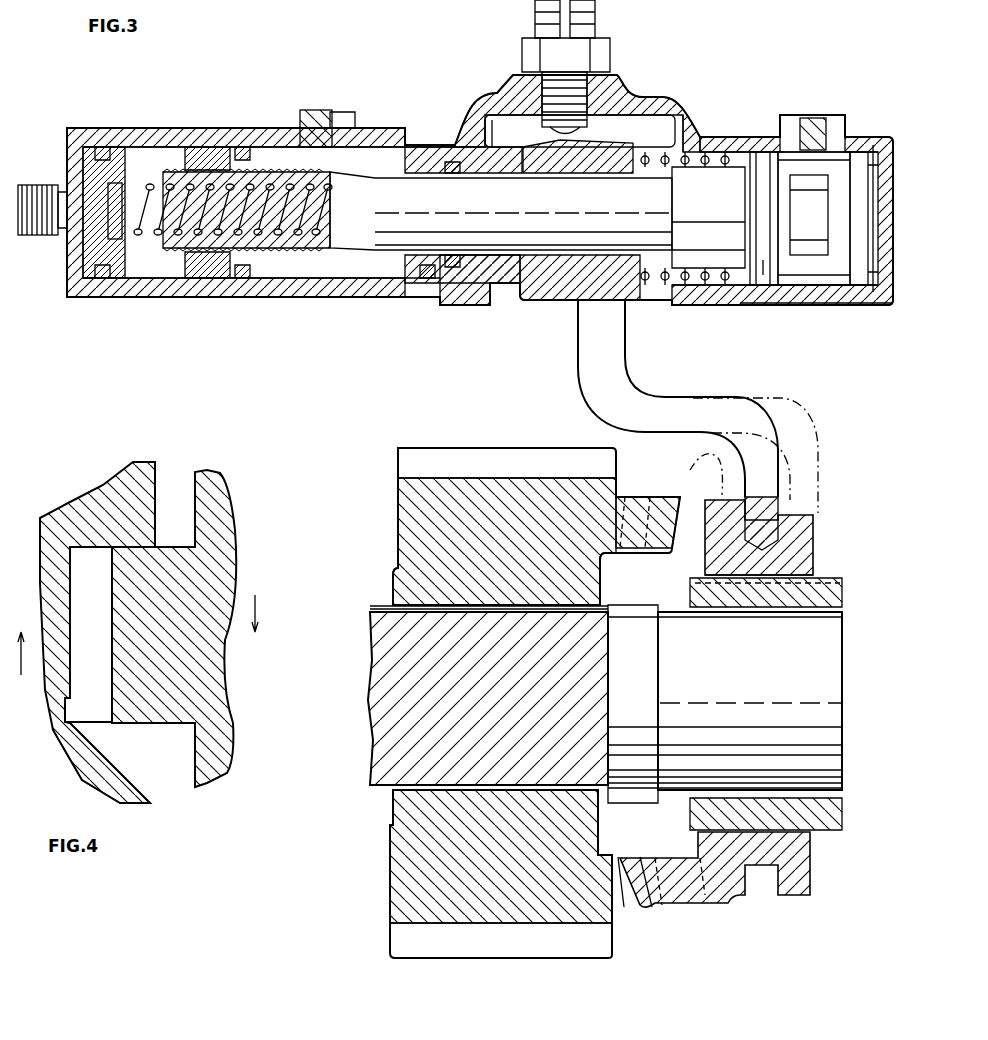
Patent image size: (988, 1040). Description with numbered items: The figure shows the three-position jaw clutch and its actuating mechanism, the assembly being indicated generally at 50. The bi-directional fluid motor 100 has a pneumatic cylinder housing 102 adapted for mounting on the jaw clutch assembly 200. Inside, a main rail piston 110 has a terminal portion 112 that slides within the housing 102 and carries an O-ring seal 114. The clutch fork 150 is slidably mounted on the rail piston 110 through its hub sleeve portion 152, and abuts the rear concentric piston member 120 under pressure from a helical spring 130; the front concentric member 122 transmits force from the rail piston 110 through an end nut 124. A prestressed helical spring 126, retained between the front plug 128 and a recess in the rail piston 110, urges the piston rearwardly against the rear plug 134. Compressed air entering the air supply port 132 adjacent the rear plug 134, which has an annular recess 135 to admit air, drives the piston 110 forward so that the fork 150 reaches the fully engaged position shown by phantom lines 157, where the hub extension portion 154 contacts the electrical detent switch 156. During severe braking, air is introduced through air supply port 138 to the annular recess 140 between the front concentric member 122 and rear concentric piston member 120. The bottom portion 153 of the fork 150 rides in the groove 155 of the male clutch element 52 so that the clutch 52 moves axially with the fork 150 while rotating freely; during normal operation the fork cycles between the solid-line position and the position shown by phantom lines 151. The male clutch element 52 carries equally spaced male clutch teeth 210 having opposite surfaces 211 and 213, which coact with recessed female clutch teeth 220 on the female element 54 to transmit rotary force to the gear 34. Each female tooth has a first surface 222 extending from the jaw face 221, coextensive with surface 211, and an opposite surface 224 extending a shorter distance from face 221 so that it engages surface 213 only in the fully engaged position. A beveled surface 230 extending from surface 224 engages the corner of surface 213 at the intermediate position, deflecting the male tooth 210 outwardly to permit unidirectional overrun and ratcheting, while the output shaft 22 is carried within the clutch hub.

In FIG. 3, the brake actuator assembly 50 is at (354, 36).
In FIG. 3, the bi-directional fluid motor 100 is at (372, 298).
In FIG. 3, the pneumatic cylinder housing 102 is at (152, 135).
In FIG. 3, the main rail piston 110 is at (655, 275).
In FIG. 3, the terminal portion 112 is at (800, 268).
In FIG. 3, the O-ring seal 114 is at (765, 155).
In FIG. 3, the rear concentric piston member 120 is at (472, 270).
In FIG. 3, the front concentric member 122 is at (272, 278).
In FIG. 3, the end nut 124 is at (202, 148).
In FIG. 3, the prestressed helical spring 126 is at (140, 237).
In FIG. 3, the front plug 128 is at (127, 287).
In FIG. 3, the helical spring 130 is at (668, 162).
In FIG. 3, the air supply port 132 is at (818, 118).
In FIG. 3, the rear plug 134 is at (824, 214).
In FIG. 3, the annular recess 135 is at (848, 160).
In FIG. 3, the air supply port 138 is at (318, 112).
In FIG. 3, the annular recess 140 is at (402, 148).
In FIG. 3, the clutch fork 150 is at (598, 365).
In FIG. 3, the phantom lines 151 is at (795, 390).
In FIG. 3, the hub sleeve portion 152 is at (578, 283).
In FIG. 3, the bottom portion 153 is at (770, 520).
In FIG. 3, the hub extension portion 154 is at (600, 138).
In FIG. 3, the groove 155 is at (820, 560).
In FIG. 3, the electrical detent switch 156 is at (590, 52).
In FIG. 3, the phantom lines 157 is at (715, 470).
In FIG. 3, the jaw clutch assembly 200 is at (830, 590).
In FIG. 3, the male clutch teeth 210 is at (688, 910).
In FIG. 4, the male clutch teeth 210 is at (190, 578).
In FIG. 4, the tooth surface 211 is at (170, 545).
In FIG. 4, the opposite tooth surface 213 is at (160, 738).
In FIG. 3, the female clutch teeth 220 is at (619, 494).
In FIG. 4, the female clutch teeth 220 is at (62, 692).
In FIG. 4, the jaw face 221 is at (76, 633).
In FIG. 4, the first surface 222 is at (85, 550).
In FIG. 4, the opposite female tooth surface 224 is at (90, 720).
In FIG. 4, the beveled surface 230 is at (140, 790).
In FIG. 3, the axle 22 is at (766, 678).
In FIG. 3, the gear 34 is at (410, 510).
In FIG. 3, the male clutch element 52 is at (800, 530).
In FIG. 3, the female element 54 is at (636, 911).